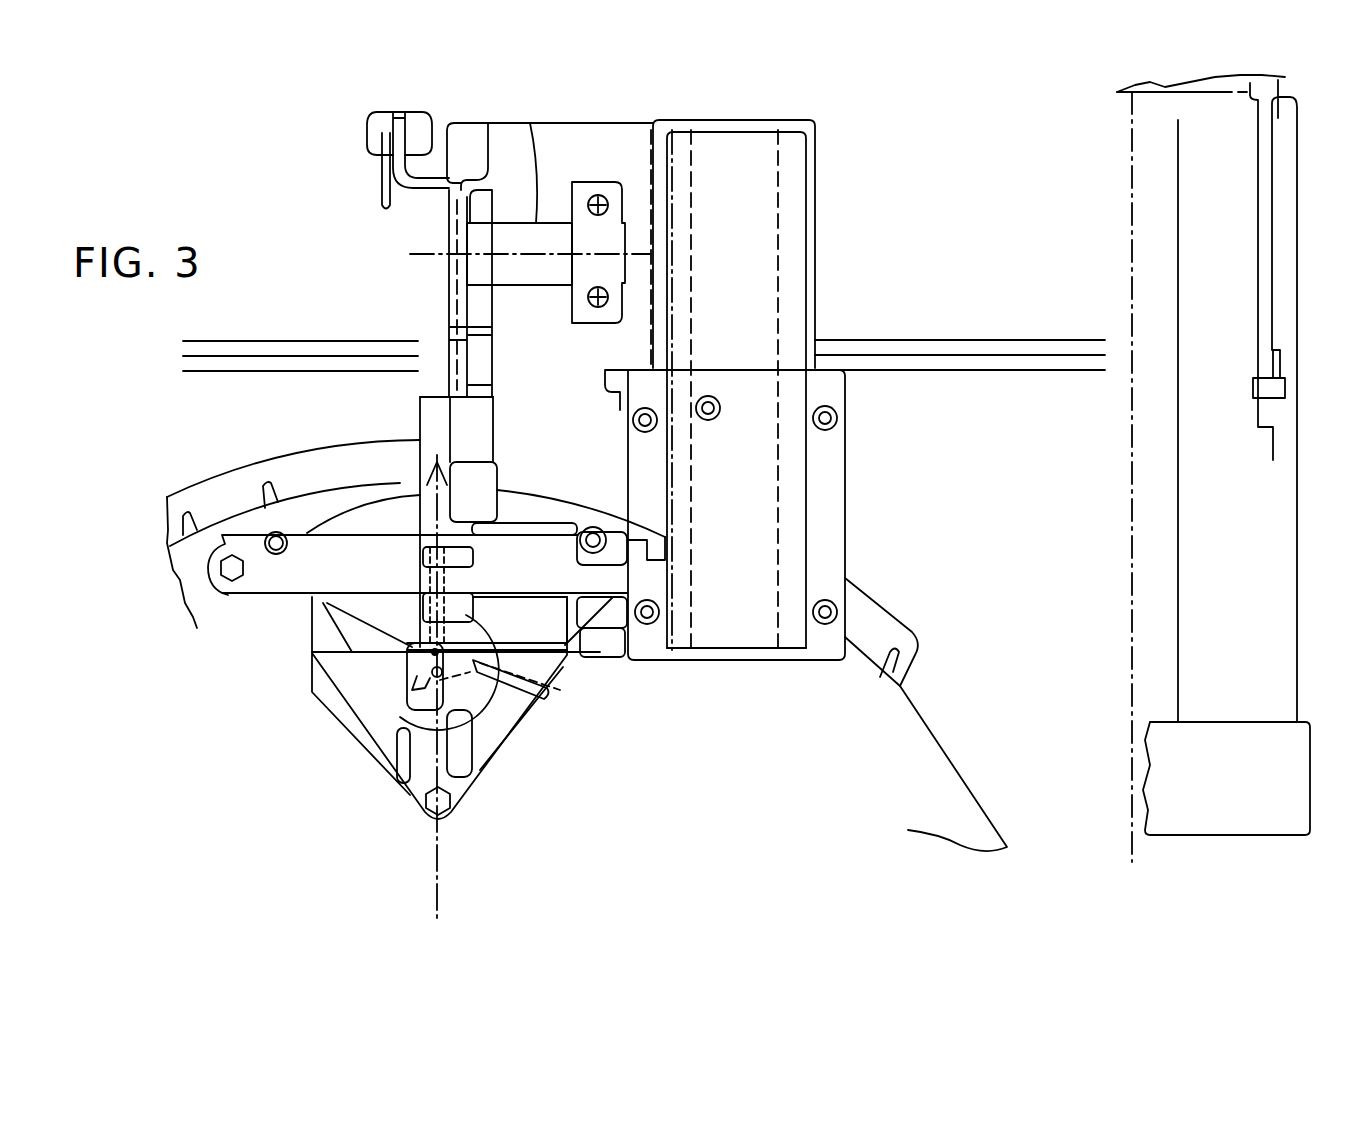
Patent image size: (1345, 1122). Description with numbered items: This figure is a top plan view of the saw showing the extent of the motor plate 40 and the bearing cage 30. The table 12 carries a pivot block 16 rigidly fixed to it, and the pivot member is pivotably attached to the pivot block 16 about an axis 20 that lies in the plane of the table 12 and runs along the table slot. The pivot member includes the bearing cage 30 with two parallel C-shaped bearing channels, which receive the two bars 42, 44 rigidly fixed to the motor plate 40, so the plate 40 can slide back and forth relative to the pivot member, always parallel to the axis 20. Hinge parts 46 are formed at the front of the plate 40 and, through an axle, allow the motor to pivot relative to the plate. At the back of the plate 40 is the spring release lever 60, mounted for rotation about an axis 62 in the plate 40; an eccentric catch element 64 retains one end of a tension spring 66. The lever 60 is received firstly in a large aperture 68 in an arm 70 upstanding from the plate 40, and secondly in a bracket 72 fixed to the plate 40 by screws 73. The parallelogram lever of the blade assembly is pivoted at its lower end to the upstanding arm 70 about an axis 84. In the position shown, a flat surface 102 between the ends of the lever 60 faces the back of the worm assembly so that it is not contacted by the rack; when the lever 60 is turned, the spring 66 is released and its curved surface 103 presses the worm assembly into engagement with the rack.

The table 12 is at (885, 798).
The pivot block 16 is at (350, 703).
The axis 20 is at (440, 890).
The bearing cage 30 is at (848, 480).
The motor plate 40 is at (810, 270).
The bar 42 is at (690, 202).
The bar 44 is at (815, 222).
The hinge parts 46 is at (607, 622).
The spring release lever 60 is at (448, 313).
The axis 62 is at (437, 257).
The eccentric catch element 64 is at (381, 185).
The tension spring 66 is at (395, 112).
The large aperture 68 is at (485, 140).
The arm 70 is at (468, 445).
The bracket 72 is at (612, 180).
The screws 73 is at (597, 193).
The axis 84 is at (490, 490).
The flat surface 102 is at (525, 268).
The curved surface 103 is at (538, 165).